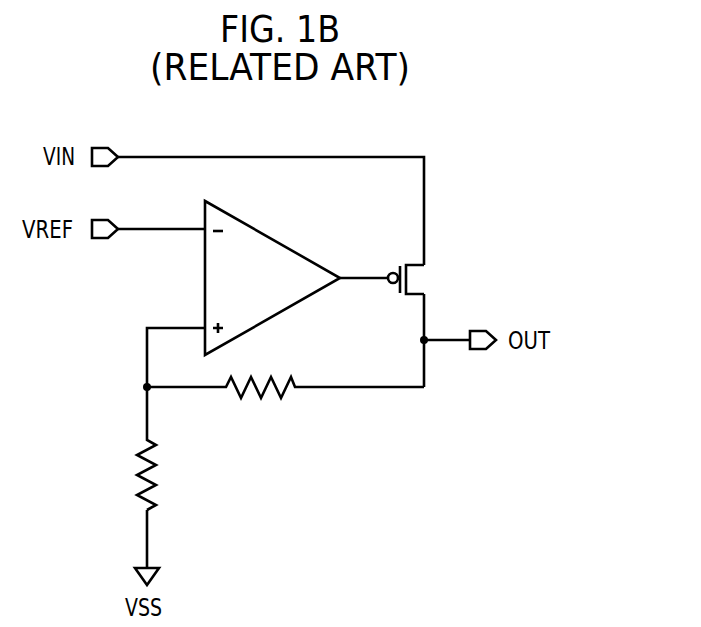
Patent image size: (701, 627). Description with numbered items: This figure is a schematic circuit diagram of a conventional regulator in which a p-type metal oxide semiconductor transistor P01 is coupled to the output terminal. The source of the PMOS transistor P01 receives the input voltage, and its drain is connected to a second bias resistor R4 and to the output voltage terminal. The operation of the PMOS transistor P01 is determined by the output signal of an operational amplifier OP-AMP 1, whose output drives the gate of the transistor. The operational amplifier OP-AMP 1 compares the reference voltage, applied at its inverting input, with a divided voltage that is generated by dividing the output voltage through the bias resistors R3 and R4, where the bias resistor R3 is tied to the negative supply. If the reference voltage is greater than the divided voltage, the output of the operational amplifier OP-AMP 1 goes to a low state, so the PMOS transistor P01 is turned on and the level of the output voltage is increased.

The operational amplifier 1 is at (296, 278).
The p-type metal oxide semiconductor transistor P01 is at (425, 279).
The second bias resistor R4 is at (285, 404).
The bias resistor R3 is at (165, 448).